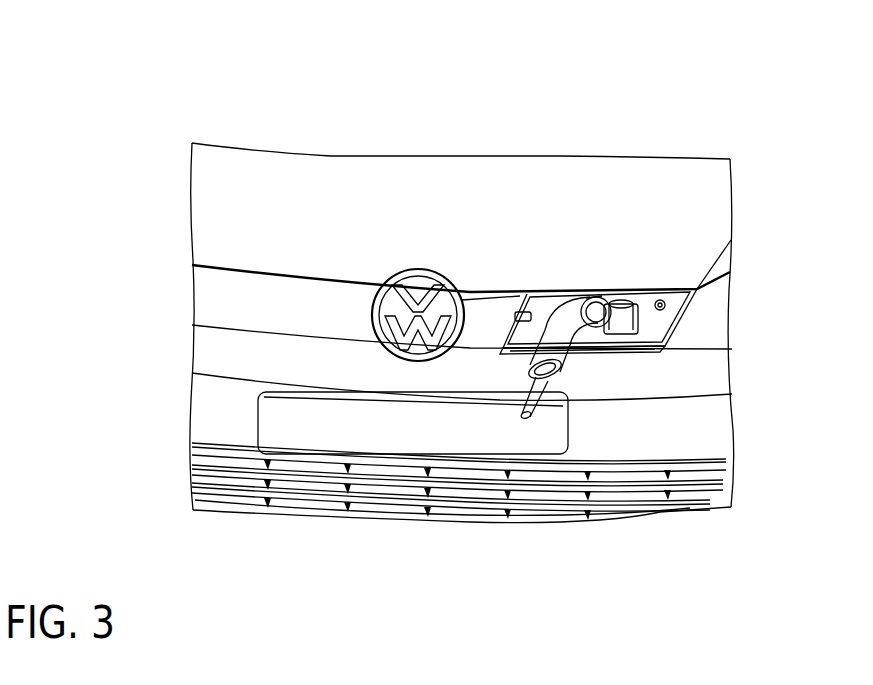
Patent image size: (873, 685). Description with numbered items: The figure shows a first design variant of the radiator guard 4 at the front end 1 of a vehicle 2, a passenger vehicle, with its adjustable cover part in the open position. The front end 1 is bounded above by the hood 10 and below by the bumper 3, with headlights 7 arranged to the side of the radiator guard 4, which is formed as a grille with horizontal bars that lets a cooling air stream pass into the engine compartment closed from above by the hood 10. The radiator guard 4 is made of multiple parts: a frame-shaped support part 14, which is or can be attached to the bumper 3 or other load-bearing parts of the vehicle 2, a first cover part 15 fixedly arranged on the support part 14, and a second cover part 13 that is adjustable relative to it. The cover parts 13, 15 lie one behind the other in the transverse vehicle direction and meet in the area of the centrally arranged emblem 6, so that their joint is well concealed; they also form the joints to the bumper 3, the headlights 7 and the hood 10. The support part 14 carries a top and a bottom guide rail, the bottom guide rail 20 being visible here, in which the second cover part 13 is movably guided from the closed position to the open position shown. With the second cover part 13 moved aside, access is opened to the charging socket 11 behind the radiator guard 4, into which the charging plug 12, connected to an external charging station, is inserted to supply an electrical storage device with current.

The front end 1 is at (443, 278).
The vehicle 2 is at (462, 333).
The bumper 3 is at (197, 399).
The radiator guard 4 is at (311, 337).
The emblem 6 is at (408, 375).
The headlights 7 is at (723, 321).
The hood 10 is at (676, 159).
The charging socket 11 is at (593, 317).
The charging plug 12 is at (545, 343).
The second cover part 13 is at (478, 331).
The support part 14 is at (633, 345).
The first cover part 15 is at (229, 303).
The second bottom guide rail 20 is at (632, 465).